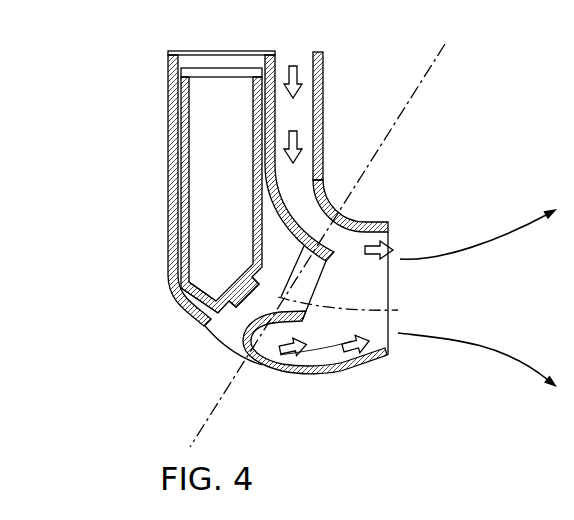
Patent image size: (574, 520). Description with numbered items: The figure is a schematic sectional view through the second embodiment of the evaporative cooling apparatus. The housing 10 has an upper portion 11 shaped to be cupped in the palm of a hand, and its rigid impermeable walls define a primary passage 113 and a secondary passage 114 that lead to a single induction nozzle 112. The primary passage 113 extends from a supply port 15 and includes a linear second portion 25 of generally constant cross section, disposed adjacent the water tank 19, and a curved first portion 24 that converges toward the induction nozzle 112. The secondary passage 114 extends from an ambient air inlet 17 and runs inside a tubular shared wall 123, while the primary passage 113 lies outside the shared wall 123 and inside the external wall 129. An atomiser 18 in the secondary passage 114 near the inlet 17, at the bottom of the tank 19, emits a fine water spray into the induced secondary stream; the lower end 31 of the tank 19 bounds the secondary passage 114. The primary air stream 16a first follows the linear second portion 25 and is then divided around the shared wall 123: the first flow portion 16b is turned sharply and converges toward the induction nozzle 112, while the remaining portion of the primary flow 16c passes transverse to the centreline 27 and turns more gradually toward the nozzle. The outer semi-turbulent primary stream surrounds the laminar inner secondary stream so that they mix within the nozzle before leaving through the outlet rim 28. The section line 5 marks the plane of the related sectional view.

The first housing 10 is at (110, 109).
The upper portion 11 is at (173, 80).
The supply port 15 is at (305, 42).
The primary air stream 16a is at (294, 134).
The first flow portion 16b is at (400, 258).
The remaining portion of the primary flow 16c is at (312, 352).
The ambient air inlet 17 is at (200, 333).
The atomiser 18 is at (246, 273).
The water tank 19 is at (198, 135).
The first portion 24 is at (283, 207).
The second portion 25 is at (293, 62).
The centreline 27 is at (398, 303).
The rim 28 is at (400, 232).
The lower end 31 is at (256, 290).
The section line 5- 5 is at (425, 47).
The induction nozzle 112 is at (380, 378).
The primary passage 113 is at (310, 218).
The secondary passage 114 is at (224, 325).
The shared wall 123 is at (288, 232).
The external wall 129 is at (312, 376).